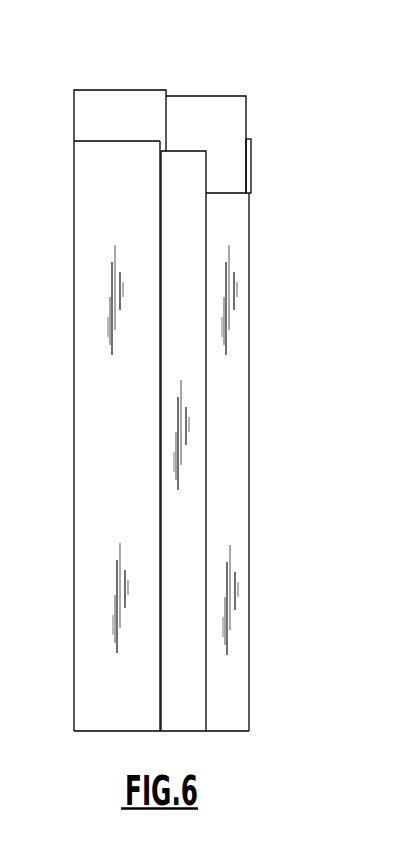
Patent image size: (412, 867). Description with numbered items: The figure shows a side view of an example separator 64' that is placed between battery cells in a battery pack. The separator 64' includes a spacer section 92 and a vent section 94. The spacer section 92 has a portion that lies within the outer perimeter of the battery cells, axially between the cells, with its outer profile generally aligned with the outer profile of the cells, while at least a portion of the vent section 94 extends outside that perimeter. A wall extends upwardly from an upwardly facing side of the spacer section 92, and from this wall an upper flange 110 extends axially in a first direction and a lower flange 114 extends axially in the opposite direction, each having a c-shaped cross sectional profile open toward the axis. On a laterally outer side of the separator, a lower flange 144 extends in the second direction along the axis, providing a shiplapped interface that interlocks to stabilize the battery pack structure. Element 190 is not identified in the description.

The separator 64' is at (377, 122).
The spacer section 92 is at (296, 351).
The vent section 94 is at (278, 139).
The upper flange 110 is at (125, 90).
The lower flange 114 is at (207, 97).
The lower flange 144 is at (183, 180).
The outer passage wall 190 is at (105, 195).